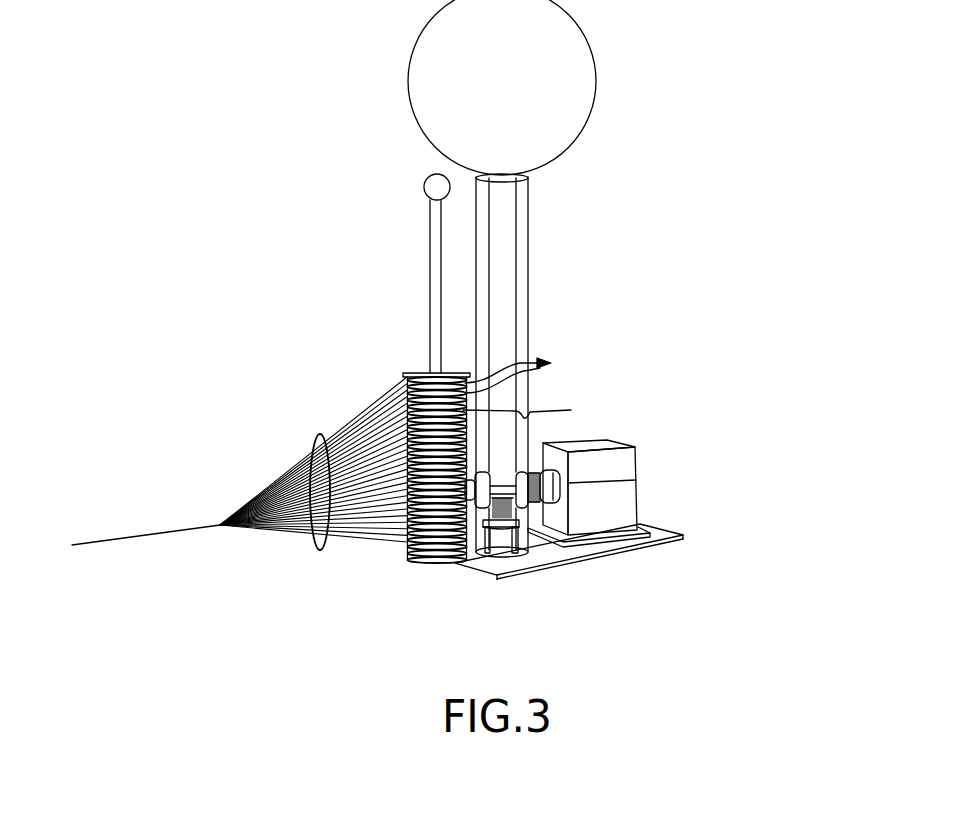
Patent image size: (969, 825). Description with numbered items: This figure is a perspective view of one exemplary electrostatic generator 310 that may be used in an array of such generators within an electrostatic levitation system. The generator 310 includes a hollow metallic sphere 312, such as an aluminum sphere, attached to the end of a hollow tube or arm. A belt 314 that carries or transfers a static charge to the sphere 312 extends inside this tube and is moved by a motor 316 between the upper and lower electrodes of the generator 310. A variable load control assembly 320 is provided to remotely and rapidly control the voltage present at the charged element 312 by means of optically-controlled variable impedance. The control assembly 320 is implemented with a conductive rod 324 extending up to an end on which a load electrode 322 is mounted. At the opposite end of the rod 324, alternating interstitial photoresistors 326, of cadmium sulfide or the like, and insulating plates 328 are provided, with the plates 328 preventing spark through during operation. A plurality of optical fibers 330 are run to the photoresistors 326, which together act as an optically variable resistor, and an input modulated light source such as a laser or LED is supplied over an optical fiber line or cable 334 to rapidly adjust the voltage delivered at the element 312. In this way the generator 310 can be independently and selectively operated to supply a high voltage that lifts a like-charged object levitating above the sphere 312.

The electrostatic generator 310 is at (703, 165).
The hollow metallic sphere 312 is at (603, 73).
The belt 314 is at (524, 301).
The motor 316 is at (646, 477).
The variable load control assembly 320 is at (415, 575).
The load electrode 322 is at (424, 189).
The conductive rod 324 is at (429, 276).
The photoresistors 326 is at (535, 405).
The insulating plates 328 is at (525, 371).
The optical fibers 330 is at (319, 433).
The optical fiber line/cable 334 is at (167, 532).